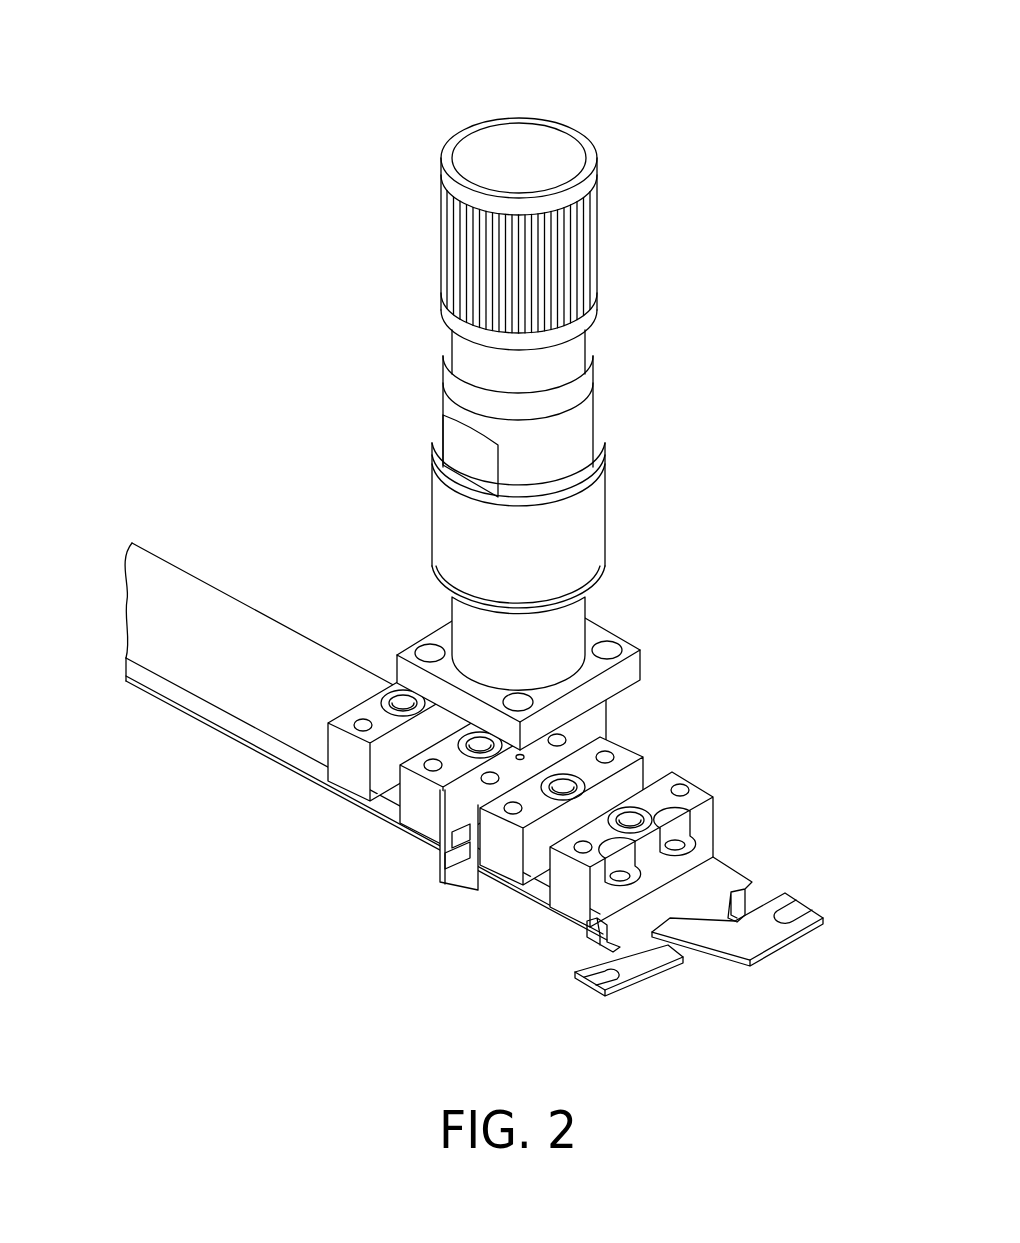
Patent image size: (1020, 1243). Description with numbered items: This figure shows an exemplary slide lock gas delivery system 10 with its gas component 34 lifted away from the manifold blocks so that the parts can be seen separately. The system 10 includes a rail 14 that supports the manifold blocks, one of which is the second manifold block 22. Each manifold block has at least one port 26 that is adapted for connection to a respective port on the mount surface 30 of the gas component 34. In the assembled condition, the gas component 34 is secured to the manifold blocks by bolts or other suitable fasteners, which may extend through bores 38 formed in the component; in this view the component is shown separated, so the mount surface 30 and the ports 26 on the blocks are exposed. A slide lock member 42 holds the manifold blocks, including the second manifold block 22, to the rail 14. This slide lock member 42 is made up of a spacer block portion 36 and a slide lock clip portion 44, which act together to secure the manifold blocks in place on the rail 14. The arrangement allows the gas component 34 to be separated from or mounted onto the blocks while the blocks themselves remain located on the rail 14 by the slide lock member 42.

The slide lock gas delivery system 10 is at (353, 190).
The rail 14 is at (224, 625).
The second manifold block 22 is at (417, 800).
The port 26 is at (460, 745).
The mount surface 30 is at (625, 697).
The gas component 34 is at (529, 157).
The spacer block portion 36 is at (515, 792).
The bore 38 is at (608, 650).
The slide lock member 42 is at (436, 872).
The slide lock clip portion 44 is at (408, 889).